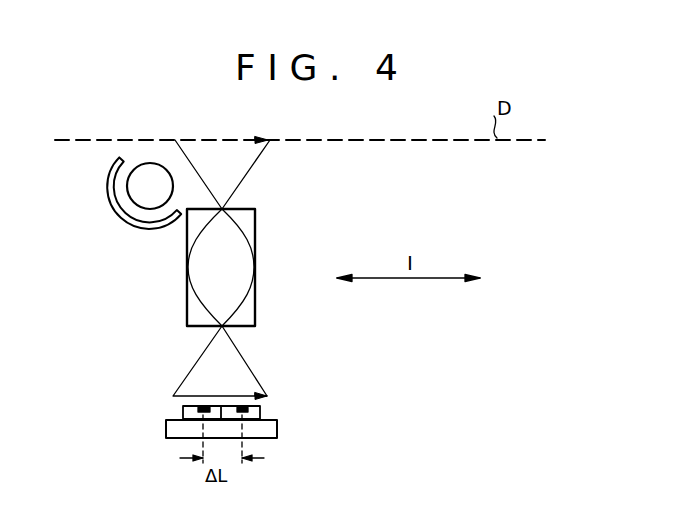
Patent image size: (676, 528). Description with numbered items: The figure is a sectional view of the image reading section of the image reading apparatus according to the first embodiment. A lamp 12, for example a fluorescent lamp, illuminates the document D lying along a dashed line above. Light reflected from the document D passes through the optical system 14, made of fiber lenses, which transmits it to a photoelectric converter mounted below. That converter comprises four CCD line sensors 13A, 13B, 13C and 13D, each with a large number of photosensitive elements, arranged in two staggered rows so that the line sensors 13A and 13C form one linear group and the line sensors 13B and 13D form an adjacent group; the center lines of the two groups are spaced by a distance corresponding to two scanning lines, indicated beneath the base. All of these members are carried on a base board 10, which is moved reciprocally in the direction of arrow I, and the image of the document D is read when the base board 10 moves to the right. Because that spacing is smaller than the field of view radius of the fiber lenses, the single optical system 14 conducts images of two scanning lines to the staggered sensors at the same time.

The base board 10 is at (273, 430).
The lamp 12 is at (131, 207).
The optical system 14 is at (253, 222).
The CCD line sensor 13A is at (255, 417).
The CCD line sensor 13B is at (183, 414).
The CCD line sensor 13C is at (242, 410).
The CCD line sensor 13D is at (204, 410).